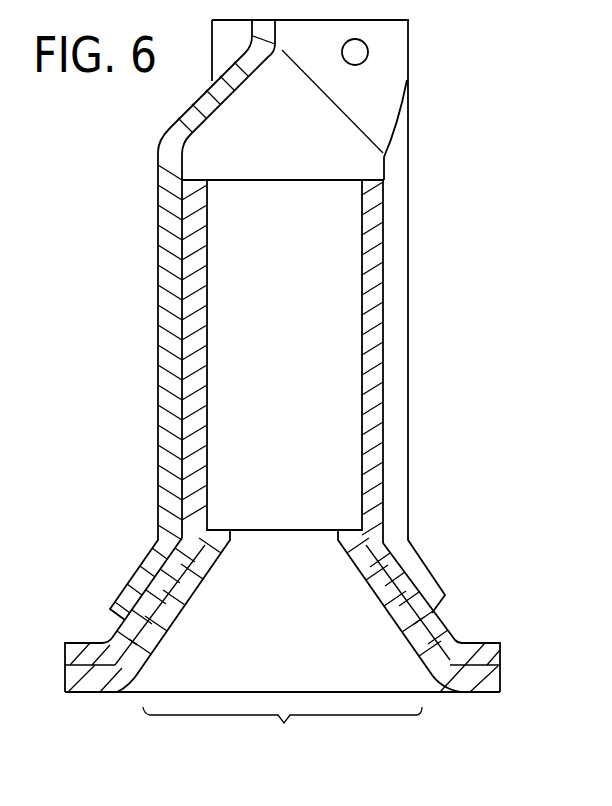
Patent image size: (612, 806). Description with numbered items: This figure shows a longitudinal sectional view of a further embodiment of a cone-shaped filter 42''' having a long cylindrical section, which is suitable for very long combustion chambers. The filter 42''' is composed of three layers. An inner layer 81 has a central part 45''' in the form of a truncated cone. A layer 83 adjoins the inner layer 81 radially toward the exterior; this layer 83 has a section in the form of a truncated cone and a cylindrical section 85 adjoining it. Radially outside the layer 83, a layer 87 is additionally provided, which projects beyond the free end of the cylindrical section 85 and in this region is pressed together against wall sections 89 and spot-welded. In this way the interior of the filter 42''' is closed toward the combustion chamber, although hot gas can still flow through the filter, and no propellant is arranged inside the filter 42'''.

The filter 42''' is at (310, 379).
The central part 45''' is at (282, 735).
The inner layer 81 is at (473, 690).
The layer 83 is at (465, 650).
The cylindrical section 85 is at (373, 357).
The layer 87 is at (170, 253).
The wall sections 89 is at (392, 77).